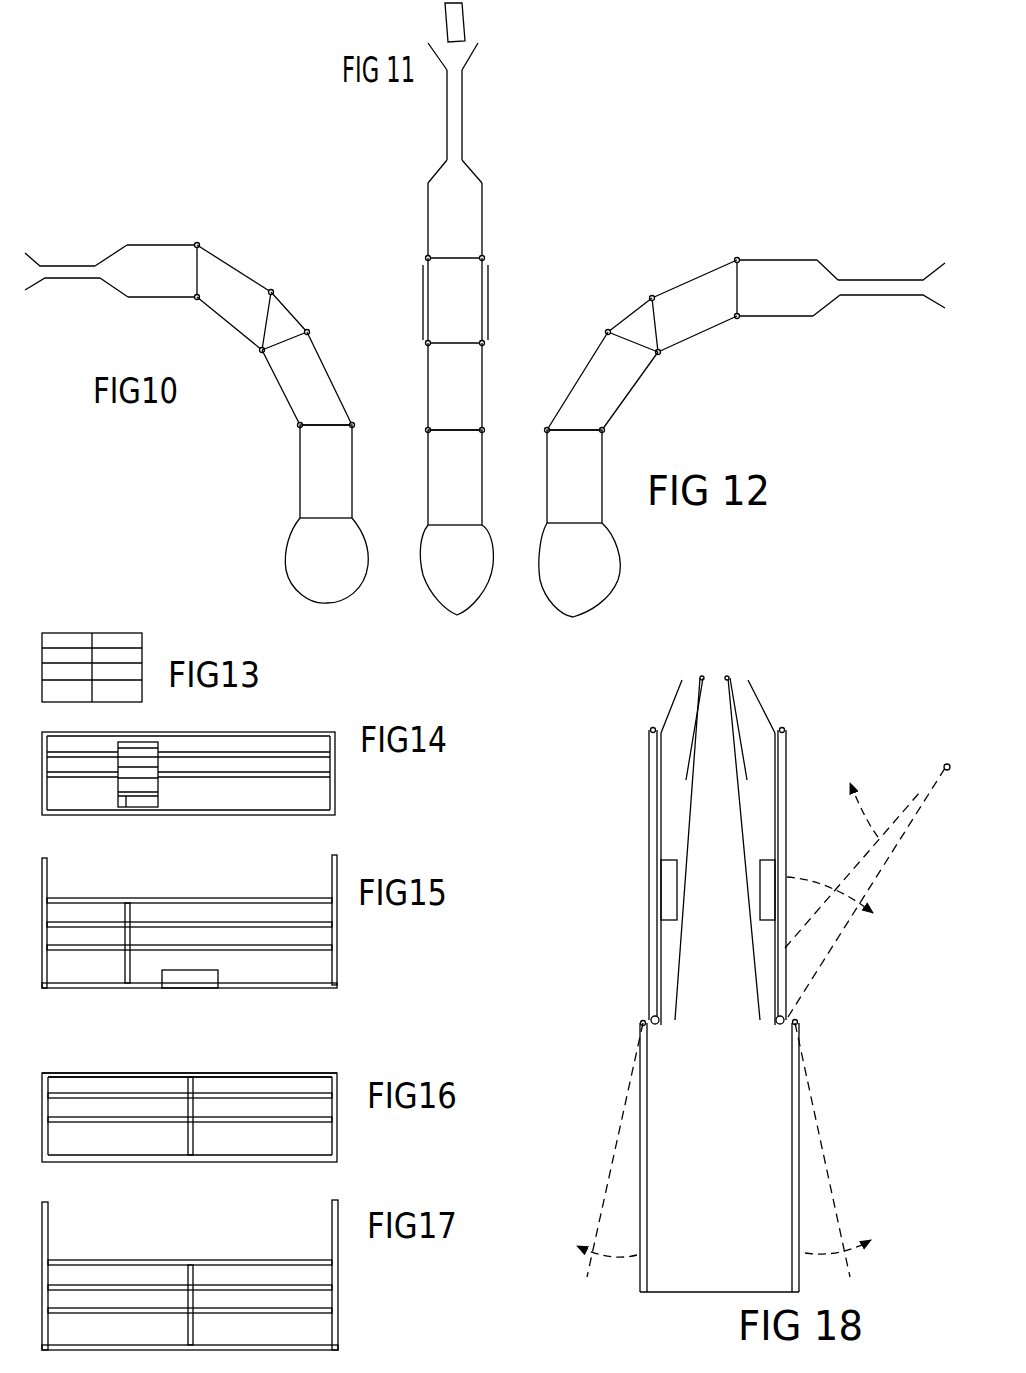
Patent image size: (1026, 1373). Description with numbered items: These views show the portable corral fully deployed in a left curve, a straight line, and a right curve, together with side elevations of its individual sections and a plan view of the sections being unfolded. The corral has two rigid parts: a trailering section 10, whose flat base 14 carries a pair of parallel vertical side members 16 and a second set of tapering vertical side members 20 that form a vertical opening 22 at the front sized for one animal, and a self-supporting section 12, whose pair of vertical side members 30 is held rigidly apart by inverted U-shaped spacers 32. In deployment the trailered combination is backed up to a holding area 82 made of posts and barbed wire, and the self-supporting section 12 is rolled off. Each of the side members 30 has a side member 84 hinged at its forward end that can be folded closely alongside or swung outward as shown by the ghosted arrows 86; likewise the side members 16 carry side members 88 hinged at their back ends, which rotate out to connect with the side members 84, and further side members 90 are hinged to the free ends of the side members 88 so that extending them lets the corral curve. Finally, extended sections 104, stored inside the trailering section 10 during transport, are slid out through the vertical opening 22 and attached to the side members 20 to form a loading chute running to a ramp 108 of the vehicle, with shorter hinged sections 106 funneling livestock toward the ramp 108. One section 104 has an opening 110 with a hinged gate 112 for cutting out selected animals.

In FIG. 10, the trailering section 10 is at (128, 233).
In FIG. 11, the trailering section 10 is at (520, 182).
In FIG. 12, the trailering section 10 is at (813, 328).
In FIG. 15, the trailering section 10 is at (207, 883).
In FIG. 18, the trailering section 10 is at (802, 716).
In FIG. 10, the self-supporting section 12 is at (278, 438).
In FIG. 11, the self-supporting section 12 is at (501, 447).
In FIG. 12, the self-supporting section 12 is at (610, 457).
In FIG. 16, the self-supporting section 12 is at (201, 1085).
In FIG. 17, the self-supporting section 12 is at (188, 1234).
In FIG. 18, the self-supporting section 12 is at (830, 1081).
In FIG. 10, the flat base 14 is at (177, 252).
In FIG. 11, the flat base 14 is at (468, 243).
In FIG. 12, the flat base 14 is at (808, 266).
In FIG. 15, the flat base 14 is at (248, 983).
In FIG. 10, the vertical side members 16 is at (163, 243).
In FIG. 11, the vertical side members 16 is at (483, 202).
In FIG. 12, the vertical side members 16 is at (763, 259).
In FIG. 18, the vertical side members 16 is at (662, 797).
In FIG. 10, the vertical side members 20 is at (114, 254).
In FIG. 11, the vertical side members 20 is at (437, 166).
In FIG. 12, the vertical side members 20 is at (822, 265).
In FIG. 18, the vertical side members 20 is at (675, 702).
In FIG. 18, the vertical opening 22 is at (712, 659).
In FIG. 10, the vertical side members 30 is at (300, 474).
In FIG. 11, the vertical side members 30 is at (428, 500).
In FIG. 12, the vertical side members 30 is at (602, 510).
In FIG. 18, the vertical side members 30 is at (647, 1233).
In FIG. 18, the inverted U-shaped spacers 32 is at (755, 1290).
In FIG. 10, the holding area 82 is at (288, 550).
In FIG. 11, the holding area 82 is at (442, 600).
In FIG. 12, the holding area 82 is at (612, 583).
In FIG. 10, the side members 84 is at (322, 358).
In FIG. 11, the side members 84 is at (428, 383).
In FIG. 12, the side members 84 is at (593, 357).
In FIG. 16, the side members 84 is at (297, 1072).
In FIG. 18, the side members 84 is at (640, 1150).
In FIG. 18, the ghosted arrows 86 is at (615, 1255).
In FIG. 10, the side members 88 is at (233, 263).
In FIG. 11, the side members 88 is at (430, 283).
In FIG. 12, the side members 88 is at (678, 283).
In FIG. 16, the side members 88 is at (204, 1064).
In FIG. 18, the side members 88 is at (650, 870).
In FIG. 10, the side members 90 is at (290, 311).
In FIG. 11, the side members 90 is at (488, 290).
In FIG. 12, the side members 90 is at (627, 315).
In FIG. 16, the side members 90 is at (204, 1086).
In FIG. 18, the side members 90 is at (652, 820).
In FIG. 10, the extended sections 104 is at (42, 283).
In FIG. 11, the extended sections 104 is at (463, 108).
In FIG. 12, the extended sections 104 is at (880, 297).
In FIG. 14, the extended sections 104 is at (245, 731).
In FIG. 18, the extended sections 104 is at (717, 848).
In FIG. 10, the shorter sections 106 is at (55, 264).
In FIG. 11, the shorter sections 106 is at (468, 63).
In FIG. 12, the shorter sections 106 is at (930, 272).
In FIG. 13, the shorter sections 106 is at (143, 640).
In FIG. 18, the shorter sections 106 is at (688, 757).
In FIG. 11, the ramp 108 is at (465, 16).
In FIG. 14, the opening 110 is at (147, 803).
In FIG. 14, the gate 112 is at (124, 807).